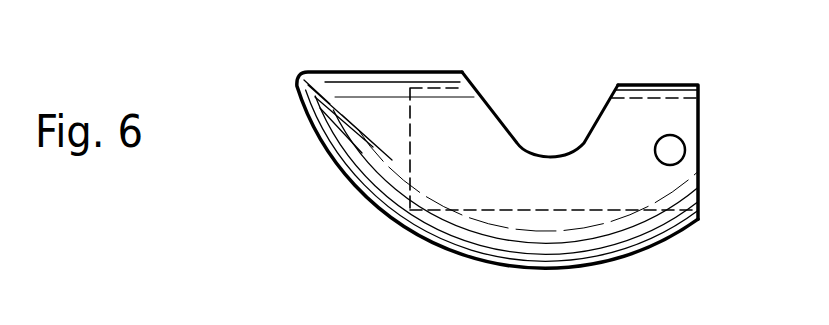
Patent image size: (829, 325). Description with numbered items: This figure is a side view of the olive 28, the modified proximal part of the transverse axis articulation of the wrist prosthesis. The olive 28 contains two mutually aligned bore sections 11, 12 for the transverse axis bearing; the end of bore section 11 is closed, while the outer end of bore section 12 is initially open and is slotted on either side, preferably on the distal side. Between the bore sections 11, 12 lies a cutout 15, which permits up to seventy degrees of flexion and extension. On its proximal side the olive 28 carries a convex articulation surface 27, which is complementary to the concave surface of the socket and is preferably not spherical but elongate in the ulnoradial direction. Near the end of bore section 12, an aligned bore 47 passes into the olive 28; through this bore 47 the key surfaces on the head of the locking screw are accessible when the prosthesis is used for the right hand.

The bore section 11 is at (450, 113).
The bore section 12 is at (667, 115).
The cutout 15 is at (578, 143).
The convex articulation surface 27 is at (496, 242).
The olive 28 is at (338, 184).
The bore 47 is at (673, 154).